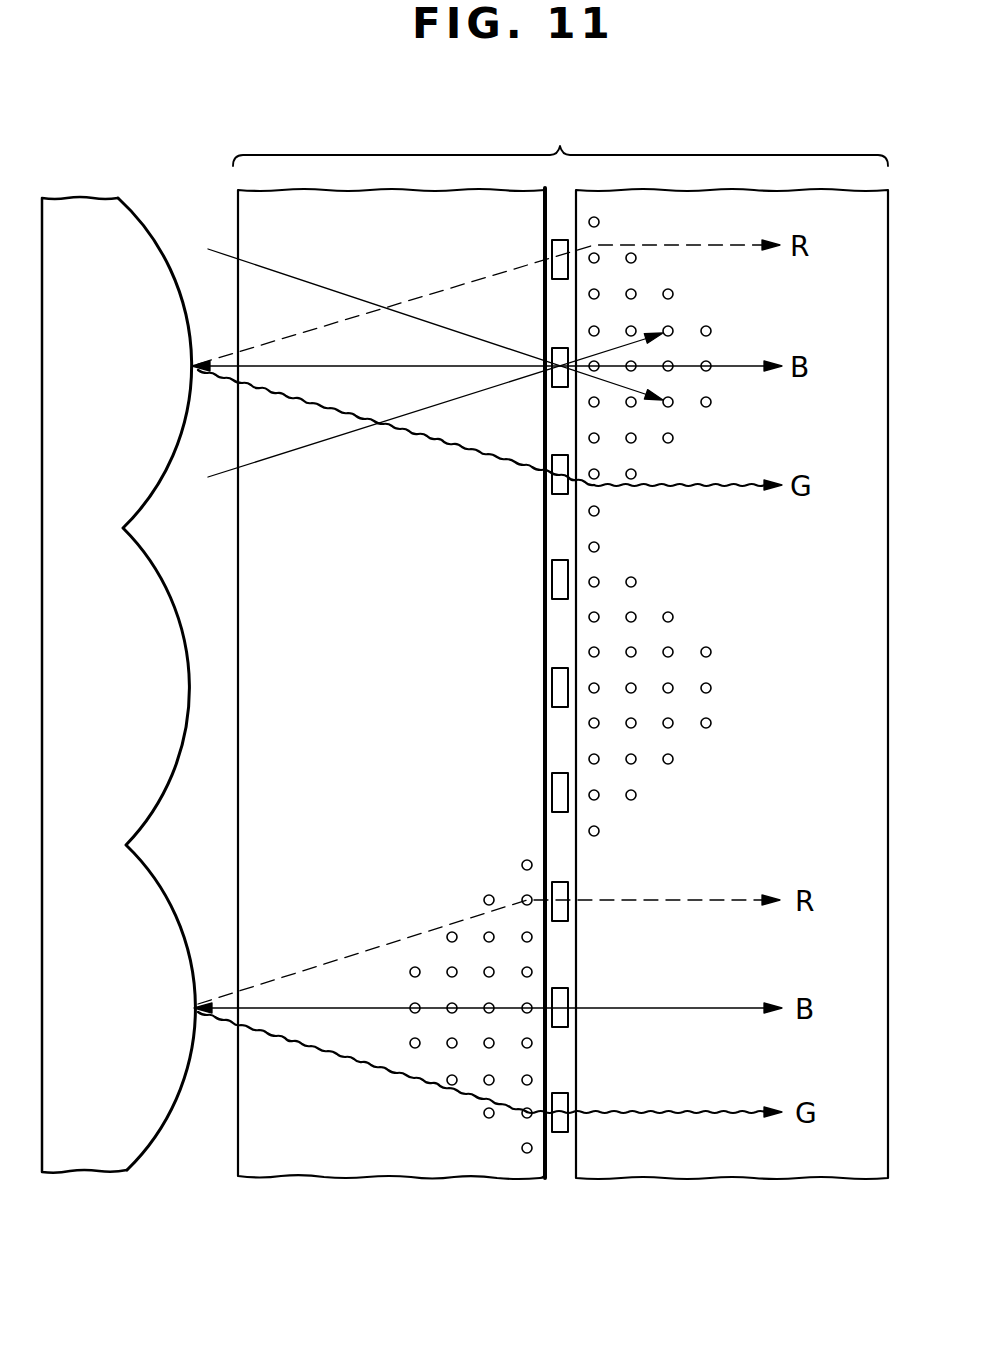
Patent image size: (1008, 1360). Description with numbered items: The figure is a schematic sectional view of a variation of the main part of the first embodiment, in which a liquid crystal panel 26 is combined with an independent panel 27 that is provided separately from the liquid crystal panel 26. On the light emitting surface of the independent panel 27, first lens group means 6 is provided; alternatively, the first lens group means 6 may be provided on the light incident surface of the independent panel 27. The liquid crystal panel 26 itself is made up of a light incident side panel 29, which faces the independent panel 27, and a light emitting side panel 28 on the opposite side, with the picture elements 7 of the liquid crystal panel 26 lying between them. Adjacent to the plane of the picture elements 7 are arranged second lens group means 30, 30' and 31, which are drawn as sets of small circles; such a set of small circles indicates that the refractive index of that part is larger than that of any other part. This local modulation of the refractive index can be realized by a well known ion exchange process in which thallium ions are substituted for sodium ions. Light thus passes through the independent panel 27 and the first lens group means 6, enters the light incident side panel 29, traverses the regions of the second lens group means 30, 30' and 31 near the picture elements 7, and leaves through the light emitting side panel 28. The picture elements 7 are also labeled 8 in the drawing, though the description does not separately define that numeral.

The first lens group means 6 is at (165, 228).
The picture elements 7 is at (564, 1185).
The pixels 8 is at (606, 685).
The liquid crystal panel 26 is at (560, 134).
The independent panel 27 is at (68, 218).
The light emitting side panel 28 is at (738, 1160).
The light incident side panel 29 is at (337, 1150).
The second lens group means 30 is at (725, 366).
The second lens group means 30' is at (729, 689).
The second lens group means 31 is at (485, 899).